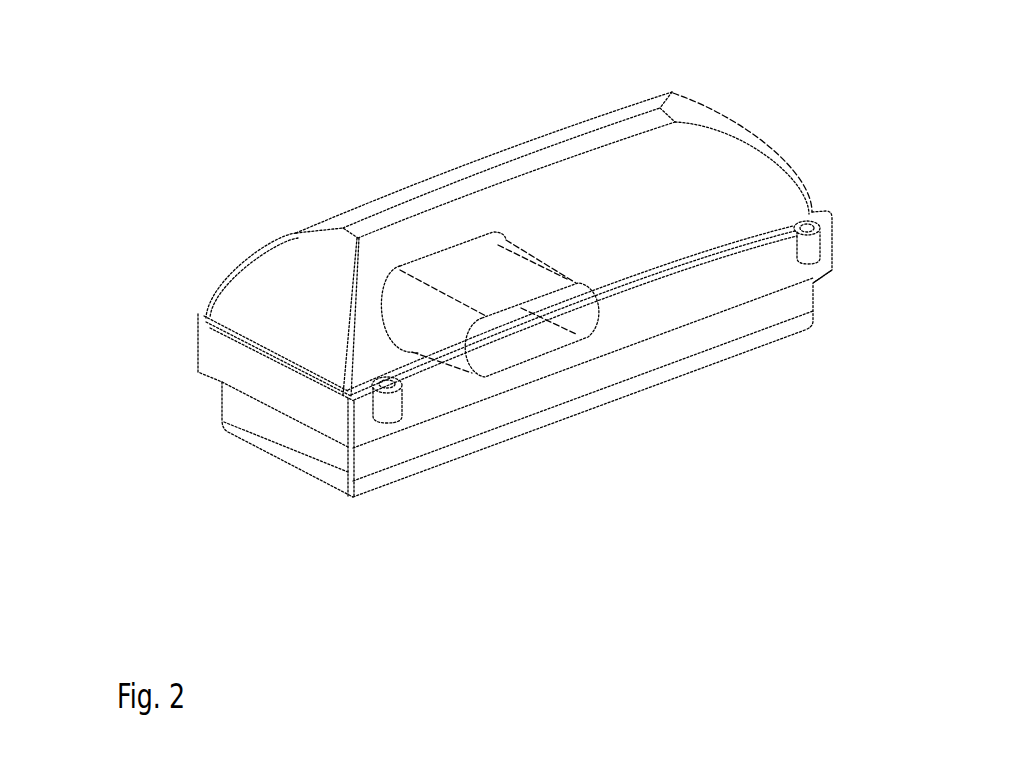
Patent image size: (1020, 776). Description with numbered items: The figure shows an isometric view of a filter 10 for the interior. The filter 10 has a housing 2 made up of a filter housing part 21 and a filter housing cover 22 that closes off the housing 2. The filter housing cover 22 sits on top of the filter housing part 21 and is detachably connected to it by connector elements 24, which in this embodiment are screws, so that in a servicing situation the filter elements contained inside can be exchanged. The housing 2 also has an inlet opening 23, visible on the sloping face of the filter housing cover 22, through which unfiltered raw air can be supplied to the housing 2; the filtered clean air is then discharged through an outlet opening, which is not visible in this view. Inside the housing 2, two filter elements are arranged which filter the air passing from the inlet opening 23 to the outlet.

The filter 10 is at (492, 113).
The housing 2 is at (566, 117).
The filter housing part 21 is at (760, 318).
The filter housing cover 22 is at (676, 142).
The inlet opening 23 is at (570, 313).
The connector elements 24 is at (812, 222).